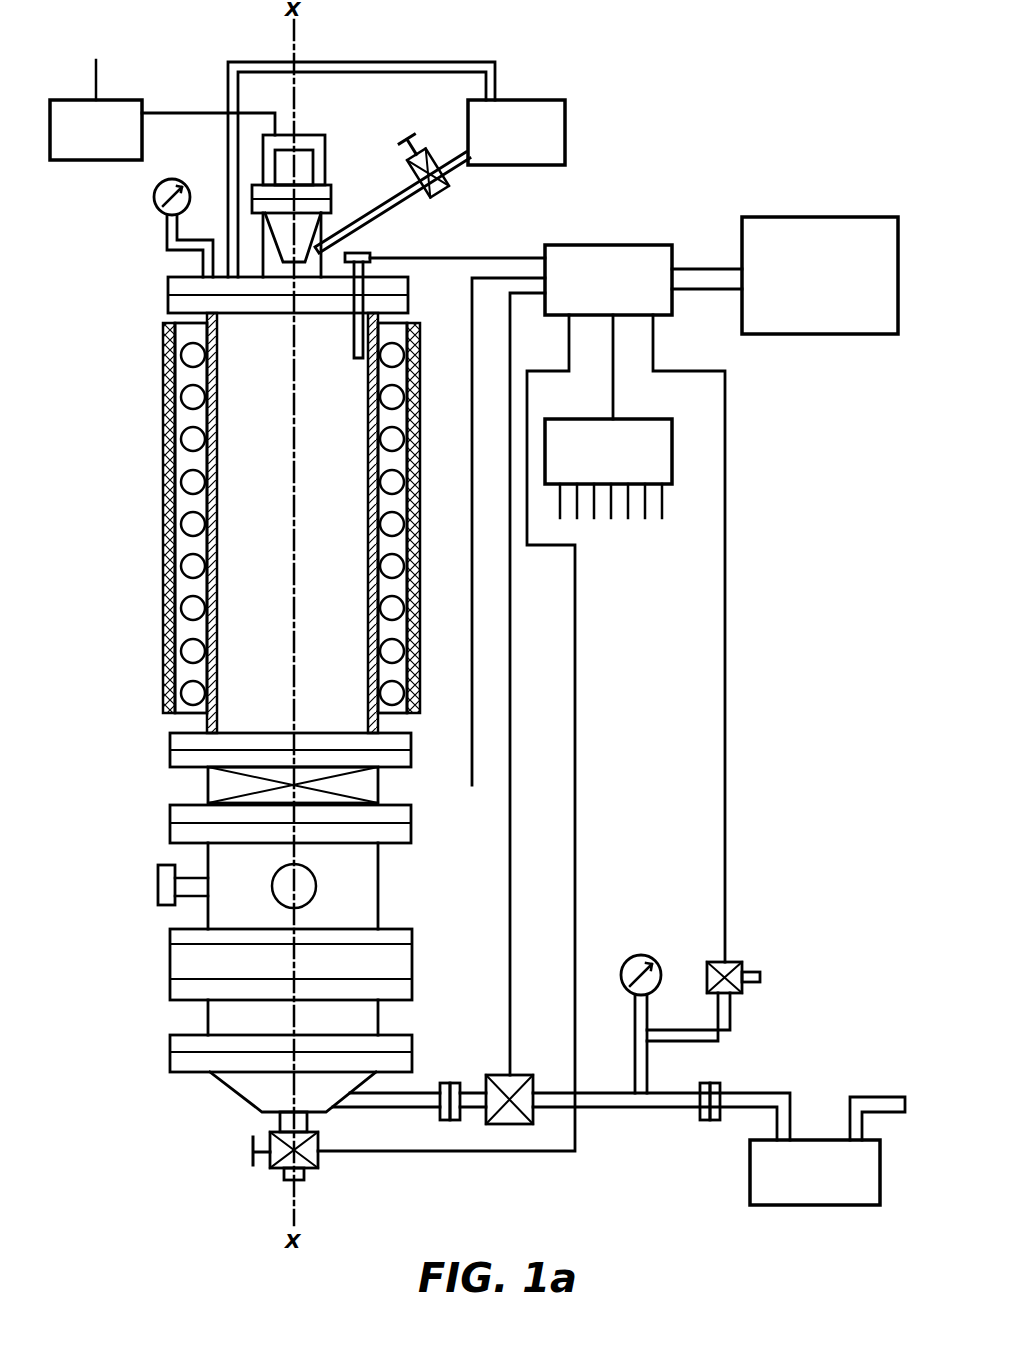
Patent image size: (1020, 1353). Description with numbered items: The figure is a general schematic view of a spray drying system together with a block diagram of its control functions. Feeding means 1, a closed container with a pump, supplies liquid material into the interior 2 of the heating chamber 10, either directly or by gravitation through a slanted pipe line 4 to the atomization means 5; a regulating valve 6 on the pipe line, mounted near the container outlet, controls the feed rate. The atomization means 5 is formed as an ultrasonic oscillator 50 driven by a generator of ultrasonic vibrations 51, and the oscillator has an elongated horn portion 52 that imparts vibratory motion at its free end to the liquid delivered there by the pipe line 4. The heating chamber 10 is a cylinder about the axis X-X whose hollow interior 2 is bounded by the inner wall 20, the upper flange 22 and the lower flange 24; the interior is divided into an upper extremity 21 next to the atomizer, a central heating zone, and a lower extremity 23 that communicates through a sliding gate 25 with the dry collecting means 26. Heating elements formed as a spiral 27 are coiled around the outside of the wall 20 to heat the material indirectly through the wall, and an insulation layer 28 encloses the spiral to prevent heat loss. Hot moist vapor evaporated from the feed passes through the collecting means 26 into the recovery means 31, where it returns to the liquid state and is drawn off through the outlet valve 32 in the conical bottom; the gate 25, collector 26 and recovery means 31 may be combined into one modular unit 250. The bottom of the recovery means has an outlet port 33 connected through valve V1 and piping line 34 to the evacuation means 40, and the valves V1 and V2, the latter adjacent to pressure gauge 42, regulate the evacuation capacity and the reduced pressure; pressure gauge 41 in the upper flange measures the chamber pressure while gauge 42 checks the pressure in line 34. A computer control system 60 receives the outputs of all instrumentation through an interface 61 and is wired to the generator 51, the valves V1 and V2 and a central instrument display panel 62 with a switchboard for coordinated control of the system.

The feeding means 1 is at (538, 100).
The interior of the heating chamber 2 is at (262, 516).
The slanted pipe line 4 is at (388, 214).
The atomization means 5 is at (311, 191).
The regulating valve 6 is at (444, 180).
The heating chamber 10 is at (122, 555).
The inner wall 20 is at (218, 383).
The upper extremity 21 is at (344, 372).
The upper flange 22 is at (168, 304).
The lower extremity 23 is at (344, 716).
The lower flange 24 is at (170, 750).
The sliding gate 25 is at (208, 782).
The dry collecting means 26 is at (378, 882).
The heating spiral 27 is at (190, 397).
The insulation layer 28 is at (162, 676).
The recovery means 31 is at (208, 1014).
The outlet valve 32 is at (318, 1172).
The outlet port 33 is at (388, 1116).
The piping line 34 is at (608, 1116).
The evacuation means 40 is at (748, 1170).
The pressure gauge 41 is at (154, 200).
The pressure gauge 42 is at (652, 958).
The ultrasonic oscillator 50 is at (313, 176).
The generator of ultrasonic vibrations 51 is at (78, 100).
The horn portion 52 is at (318, 226).
The computer control system 60 is at (572, 244).
The interface 61 is at (656, 418).
The central instrument display panel 62 is at (774, 216).
The modular unit 250 is at (122, 962).
The regulating valve V1 is at (520, 1070).
The regulating valve V2 is at (740, 958).